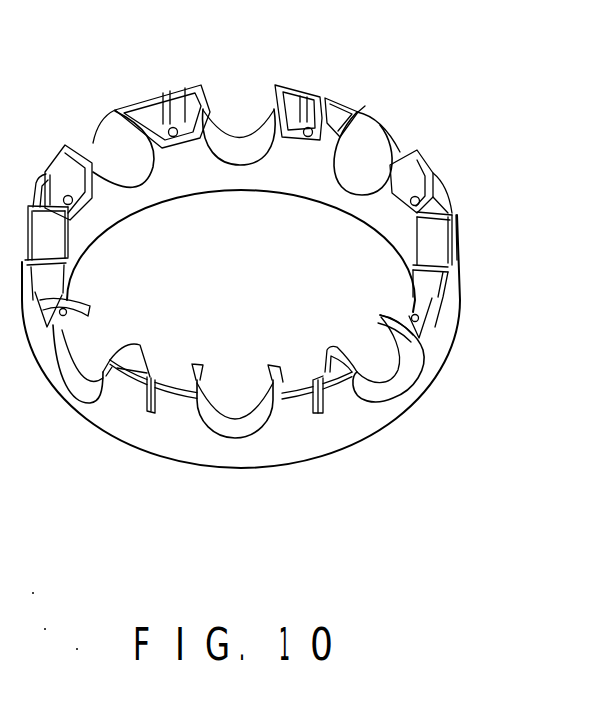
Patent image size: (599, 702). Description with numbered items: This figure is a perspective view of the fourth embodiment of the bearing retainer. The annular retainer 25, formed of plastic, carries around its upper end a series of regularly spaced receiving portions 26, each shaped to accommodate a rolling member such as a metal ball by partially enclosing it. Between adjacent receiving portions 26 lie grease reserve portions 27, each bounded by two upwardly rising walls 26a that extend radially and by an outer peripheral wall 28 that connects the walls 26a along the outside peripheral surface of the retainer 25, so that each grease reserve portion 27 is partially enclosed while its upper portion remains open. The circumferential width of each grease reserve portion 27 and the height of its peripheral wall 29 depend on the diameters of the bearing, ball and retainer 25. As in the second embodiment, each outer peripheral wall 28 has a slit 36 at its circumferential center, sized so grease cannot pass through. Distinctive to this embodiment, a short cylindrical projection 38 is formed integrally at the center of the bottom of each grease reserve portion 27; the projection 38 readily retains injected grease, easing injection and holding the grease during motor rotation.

The annular retainer 25 is at (175, 450).
The receiving portion 26 is at (230, 152).
The upwardly rising wall 26a is at (275, 100).
The grease reserve portion 27 is at (369, 99).
The outer peripheral wall 28 is at (300, 90).
The peripheral wall 29 is at (367, 101).
The slit 36 is at (327, 93).
The short cylindrical projection 38 is at (168, 93).